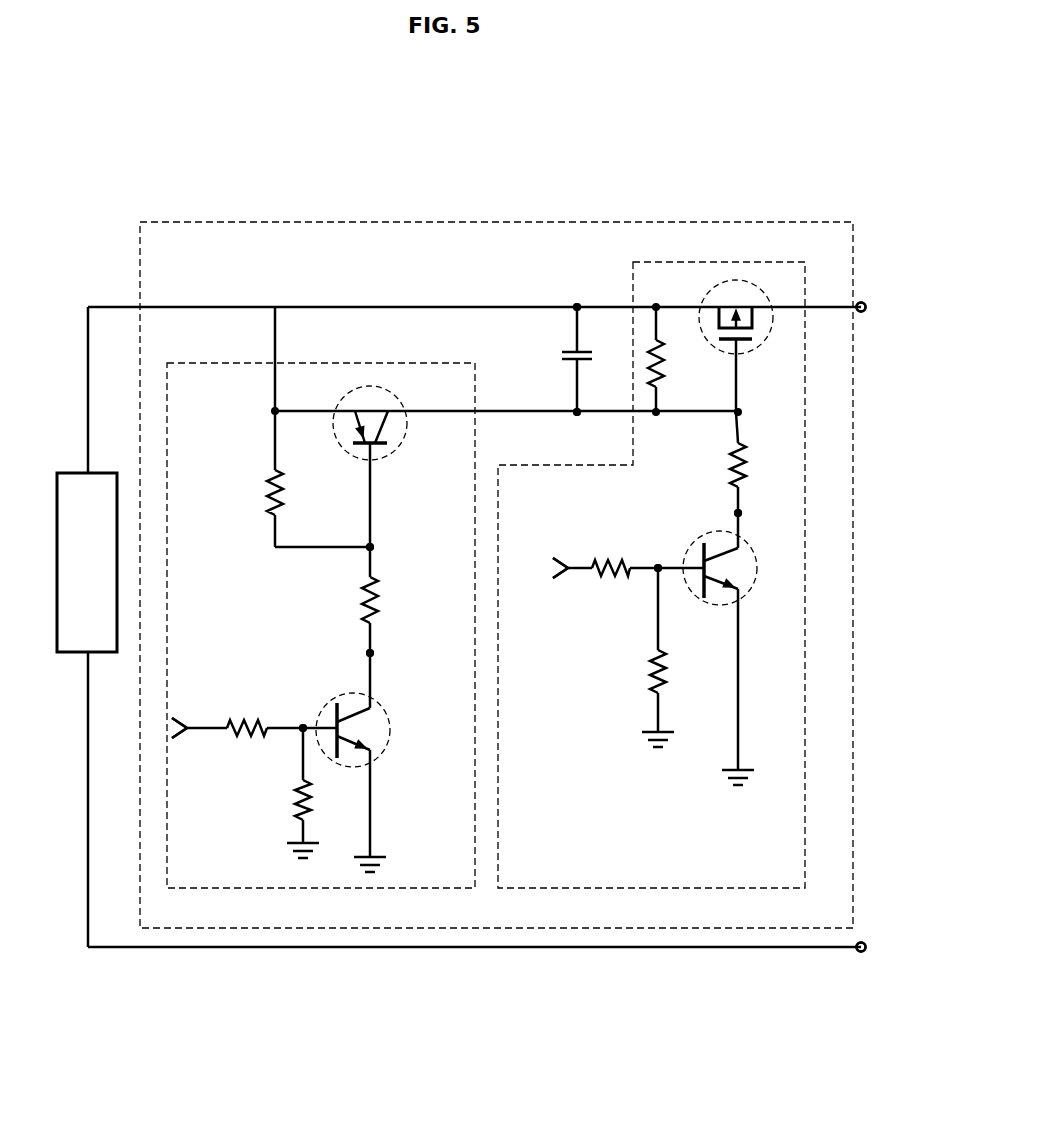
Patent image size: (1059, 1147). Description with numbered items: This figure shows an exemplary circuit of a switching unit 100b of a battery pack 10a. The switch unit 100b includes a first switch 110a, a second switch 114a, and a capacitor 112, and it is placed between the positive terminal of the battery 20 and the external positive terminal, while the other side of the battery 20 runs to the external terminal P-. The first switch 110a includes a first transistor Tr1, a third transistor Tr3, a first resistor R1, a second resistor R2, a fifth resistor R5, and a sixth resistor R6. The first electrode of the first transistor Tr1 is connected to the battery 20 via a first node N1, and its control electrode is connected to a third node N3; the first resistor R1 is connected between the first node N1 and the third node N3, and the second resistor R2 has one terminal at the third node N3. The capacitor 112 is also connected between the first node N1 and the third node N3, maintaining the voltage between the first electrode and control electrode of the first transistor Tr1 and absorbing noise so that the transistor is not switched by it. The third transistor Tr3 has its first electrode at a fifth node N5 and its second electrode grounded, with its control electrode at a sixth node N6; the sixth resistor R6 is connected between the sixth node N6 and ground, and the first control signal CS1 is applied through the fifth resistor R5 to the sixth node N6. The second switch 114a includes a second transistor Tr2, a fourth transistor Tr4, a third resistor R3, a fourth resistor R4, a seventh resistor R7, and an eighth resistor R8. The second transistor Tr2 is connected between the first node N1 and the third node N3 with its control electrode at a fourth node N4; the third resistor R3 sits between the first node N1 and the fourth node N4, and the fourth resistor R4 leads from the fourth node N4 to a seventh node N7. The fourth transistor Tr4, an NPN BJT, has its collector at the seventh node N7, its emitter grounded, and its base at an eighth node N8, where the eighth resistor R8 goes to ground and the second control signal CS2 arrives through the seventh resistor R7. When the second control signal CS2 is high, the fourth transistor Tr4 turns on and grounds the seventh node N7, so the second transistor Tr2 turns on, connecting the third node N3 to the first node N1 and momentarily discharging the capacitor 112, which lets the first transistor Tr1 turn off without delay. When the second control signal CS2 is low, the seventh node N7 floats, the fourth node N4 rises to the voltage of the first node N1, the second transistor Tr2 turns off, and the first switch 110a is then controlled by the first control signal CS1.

The battery pack 10a is at (496, 500).
The battery 20 is at (73, 473).
The switch unit 100b is at (778, 222).
The first switch 110a is at (645, 888).
The second switch 114a is at (320, 888).
The capacitor 112 is at (562, 352).
The first resistor R1 is at (673, 363).
The second resistor R2 is at (755, 465).
The third resistor R3 is at (262, 492).
The fourth resistor R4 is at (389, 600).
The fifth resistor R5 is at (611, 556).
The sixth resistor R6 is at (675, 671).
The seventh resistor R7 is at (247, 717).
The eighth resistor R8 is at (320, 800).
The first transistor Tr1 is at (752, 347).
The second transistor Tr2 is at (398, 447).
The third transistor Tr3 is at (742, 597).
The fourth transistor Tr4 is at (391, 730).
The first node N1 is at (413, 350).
The third node N3 is at (578, 427).
The fourth node N4 is at (391, 548).
The fifth node N5 is at (755, 513).
The sixth node N6 is at (659, 554).
The seventh node N7 is at (391, 654).
The eighth node N8 is at (303, 715).
The first control signal CS1 is at (573, 585).
The second control signal CS2 is at (224, 745).
The external terminal P- is at (874, 948).